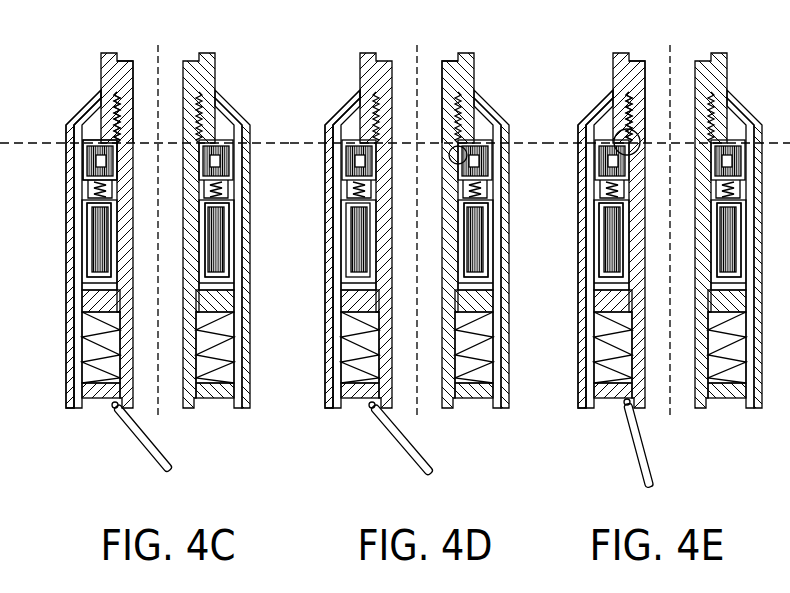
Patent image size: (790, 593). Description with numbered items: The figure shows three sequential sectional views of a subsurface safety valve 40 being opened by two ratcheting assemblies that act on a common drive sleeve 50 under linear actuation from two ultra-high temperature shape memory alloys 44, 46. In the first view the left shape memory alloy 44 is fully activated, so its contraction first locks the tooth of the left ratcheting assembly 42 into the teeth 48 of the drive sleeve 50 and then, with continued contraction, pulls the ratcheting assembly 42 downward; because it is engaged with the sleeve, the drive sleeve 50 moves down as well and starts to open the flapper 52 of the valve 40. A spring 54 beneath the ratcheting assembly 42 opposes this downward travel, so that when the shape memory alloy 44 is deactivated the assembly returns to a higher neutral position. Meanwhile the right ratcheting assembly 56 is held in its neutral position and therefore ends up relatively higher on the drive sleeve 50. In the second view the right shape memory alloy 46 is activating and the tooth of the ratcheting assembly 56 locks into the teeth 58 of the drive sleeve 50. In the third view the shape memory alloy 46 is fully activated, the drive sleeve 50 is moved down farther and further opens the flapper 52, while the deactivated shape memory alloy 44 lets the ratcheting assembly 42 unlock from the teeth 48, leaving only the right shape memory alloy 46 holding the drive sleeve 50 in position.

In FIG. 4C, the subsurface safety valve 40 is at (100, 88).
In FIG. 4D, the subsurface safety valve 40 is at (359, 88).
In FIG. 4E, the subsurface safety valve 40 is at (612, 88).
In FIG. 4C, the ratcheting assembly 42 is at (54, 158).
In FIG. 4E, the ratcheting assembly 42 is at (566, 166).
In FIG. 4C, the ultra-high temperature shape memory alloy 44 is at (97, 252).
In FIG. 4E, the ultra-high temperature shape memory alloy 44 is at (600, 252).
In FIG. 4C, the ultra-high temperature shape memory alloy 46 is at (232, 243).
In FIG. 4D, the ultra-high temperature shape memory alloy 46 is at (488, 247).
In FIG. 4E, the ultra-high temperature shape memory alloy 46 is at (730, 247).
In FIG. 4C, the teeth 48 is at (122, 104).
In FIG. 4E, the teeth 48 is at (634, 104).
In FIG. 4C, the drive sleeve 50 is at (128, 61).
In FIG. 4D, the drive sleeve 50 is at (443, 62).
In FIG. 4E, the drive sleeve 50 is at (640, 62).
In FIG. 4C, the flapper 52 is at (134, 440).
In FIG. 4E, the flapper 52 is at (632, 440).
In FIG. 4C, the spring 54 is at (86, 184).
In FIG. 4C, the ratcheting assembly 56 is at (262, 157).
In FIG. 4D, the ratcheting assembly 56 is at (516, 153).
In FIG. 4D, the teeth 58 is at (470, 100).